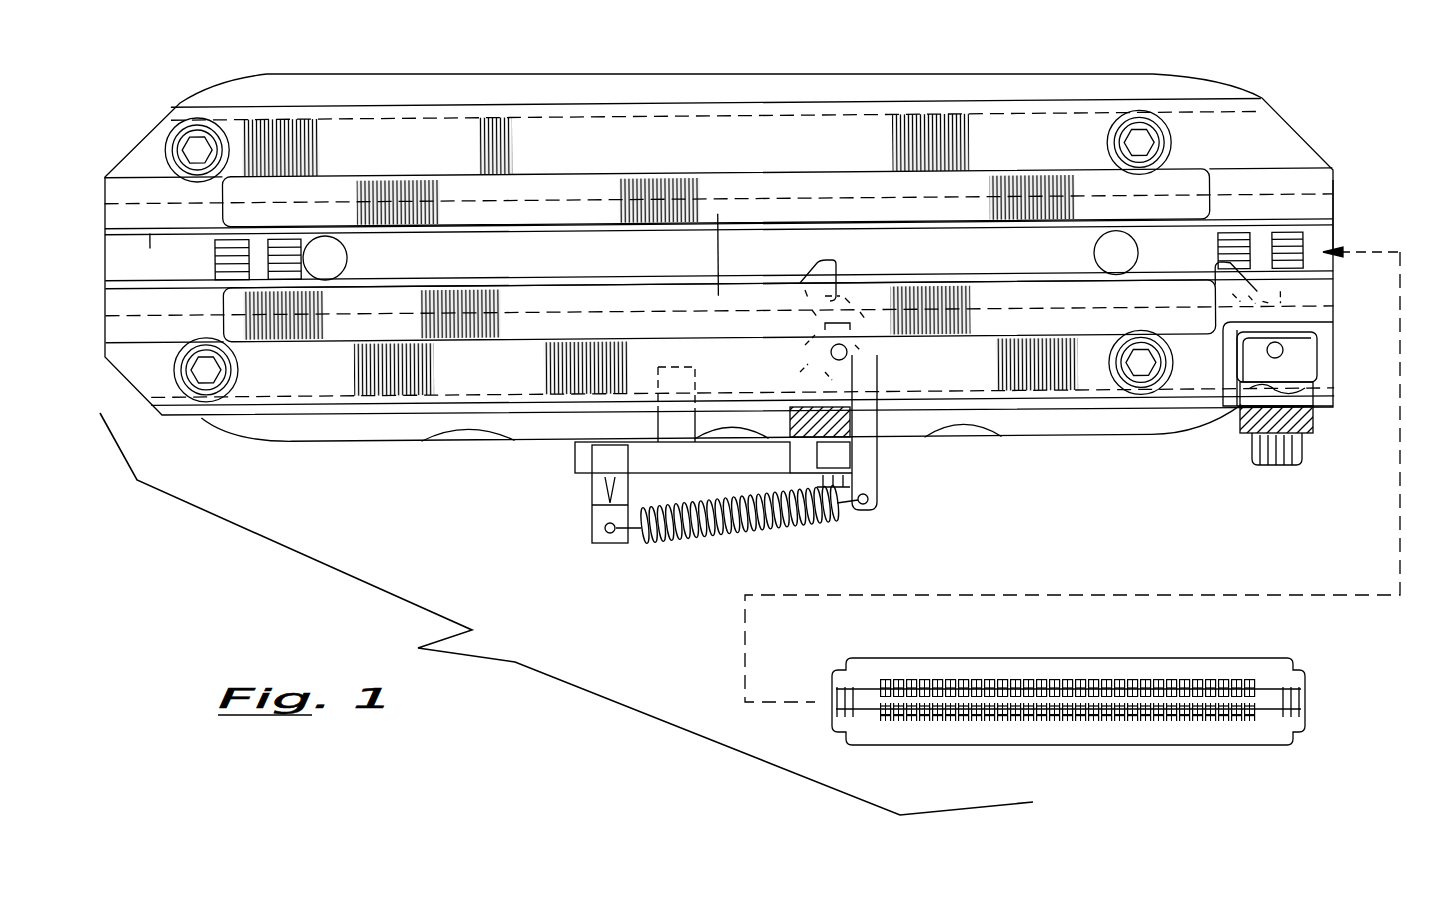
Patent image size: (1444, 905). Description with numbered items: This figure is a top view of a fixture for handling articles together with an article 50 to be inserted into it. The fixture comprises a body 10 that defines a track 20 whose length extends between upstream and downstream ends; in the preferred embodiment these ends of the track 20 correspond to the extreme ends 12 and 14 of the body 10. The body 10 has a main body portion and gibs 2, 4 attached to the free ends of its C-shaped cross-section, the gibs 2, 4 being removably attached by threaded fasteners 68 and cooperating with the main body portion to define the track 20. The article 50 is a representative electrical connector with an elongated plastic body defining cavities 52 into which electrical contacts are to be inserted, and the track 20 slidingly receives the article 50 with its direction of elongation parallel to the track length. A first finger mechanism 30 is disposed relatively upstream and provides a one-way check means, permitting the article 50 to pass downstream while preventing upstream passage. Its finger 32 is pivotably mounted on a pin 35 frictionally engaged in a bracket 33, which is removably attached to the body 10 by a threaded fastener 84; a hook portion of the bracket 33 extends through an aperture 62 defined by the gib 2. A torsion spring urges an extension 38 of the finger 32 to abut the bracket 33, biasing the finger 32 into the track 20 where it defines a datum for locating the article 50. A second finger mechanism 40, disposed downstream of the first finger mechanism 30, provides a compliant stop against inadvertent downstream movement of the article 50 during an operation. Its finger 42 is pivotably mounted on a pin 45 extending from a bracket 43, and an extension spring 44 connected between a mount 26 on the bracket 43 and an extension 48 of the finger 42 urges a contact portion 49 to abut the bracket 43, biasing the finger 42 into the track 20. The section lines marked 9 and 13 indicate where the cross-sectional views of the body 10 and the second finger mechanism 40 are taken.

The gib 2 is at (1087, 367).
The gib 4 is at (1020, 130).
The section line 9- 9 is at (1348, 488).
The body 10 is at (1053, 63).
The extreme end 12 is at (1333, 237).
The section line 13- 13 is at (806, 562).
The extreme end 14 is at (105, 265).
The track 20 is at (555, 247).
The mount 26 is at (590, 520).
The first finger mechanism 30 is at (1214, 479).
The finger 32 is at (1257, 293).
The bracket 33 is at (1240, 424).
The pin 35 is at (1283, 350).
The extension 38 is at (1300, 393).
The second finger mechanism 40 is at (900, 468).
The finger 42 is at (842, 264).
The bracket 43 is at (790, 424).
The extension spring 44 is at (700, 540).
The pin 45 is at (830, 355).
The extension 48 is at (882, 502).
The contact portion 49 is at (850, 440).
The article 50 is at (940, 658).
The cavities 52 is at (1207, 680).
The aperture 62 is at (1318, 362).
The threaded fasteners 68 is at (193, 148).
The threaded fastener 84 is at (1252, 452).